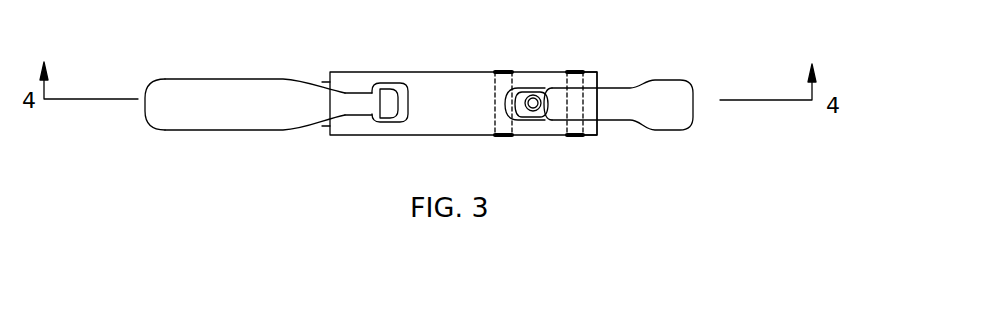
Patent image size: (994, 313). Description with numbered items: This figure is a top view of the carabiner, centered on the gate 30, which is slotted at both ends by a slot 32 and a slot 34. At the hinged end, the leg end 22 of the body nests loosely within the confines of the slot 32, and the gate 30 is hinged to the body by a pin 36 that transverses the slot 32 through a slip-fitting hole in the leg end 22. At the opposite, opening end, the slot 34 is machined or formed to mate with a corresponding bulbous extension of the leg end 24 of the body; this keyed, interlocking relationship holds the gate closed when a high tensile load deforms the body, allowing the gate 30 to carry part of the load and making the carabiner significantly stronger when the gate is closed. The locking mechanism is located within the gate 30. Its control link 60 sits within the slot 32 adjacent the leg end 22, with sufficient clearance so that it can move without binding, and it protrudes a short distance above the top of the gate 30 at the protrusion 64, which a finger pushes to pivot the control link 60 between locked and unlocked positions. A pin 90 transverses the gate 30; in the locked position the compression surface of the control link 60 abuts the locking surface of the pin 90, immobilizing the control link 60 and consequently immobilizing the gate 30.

The leg end 22 is at (560, 107).
The leg end 24 is at (392, 107).
The gate 30 is at (427, 110).
The slot 32 is at (588, 78).
The slot 34 is at (352, 90).
The pin 36 is at (572, 136).
The control link 60 is at (523, 95).
The protrusion 64 is at (535, 97).
The pin 90 is at (503, 136).